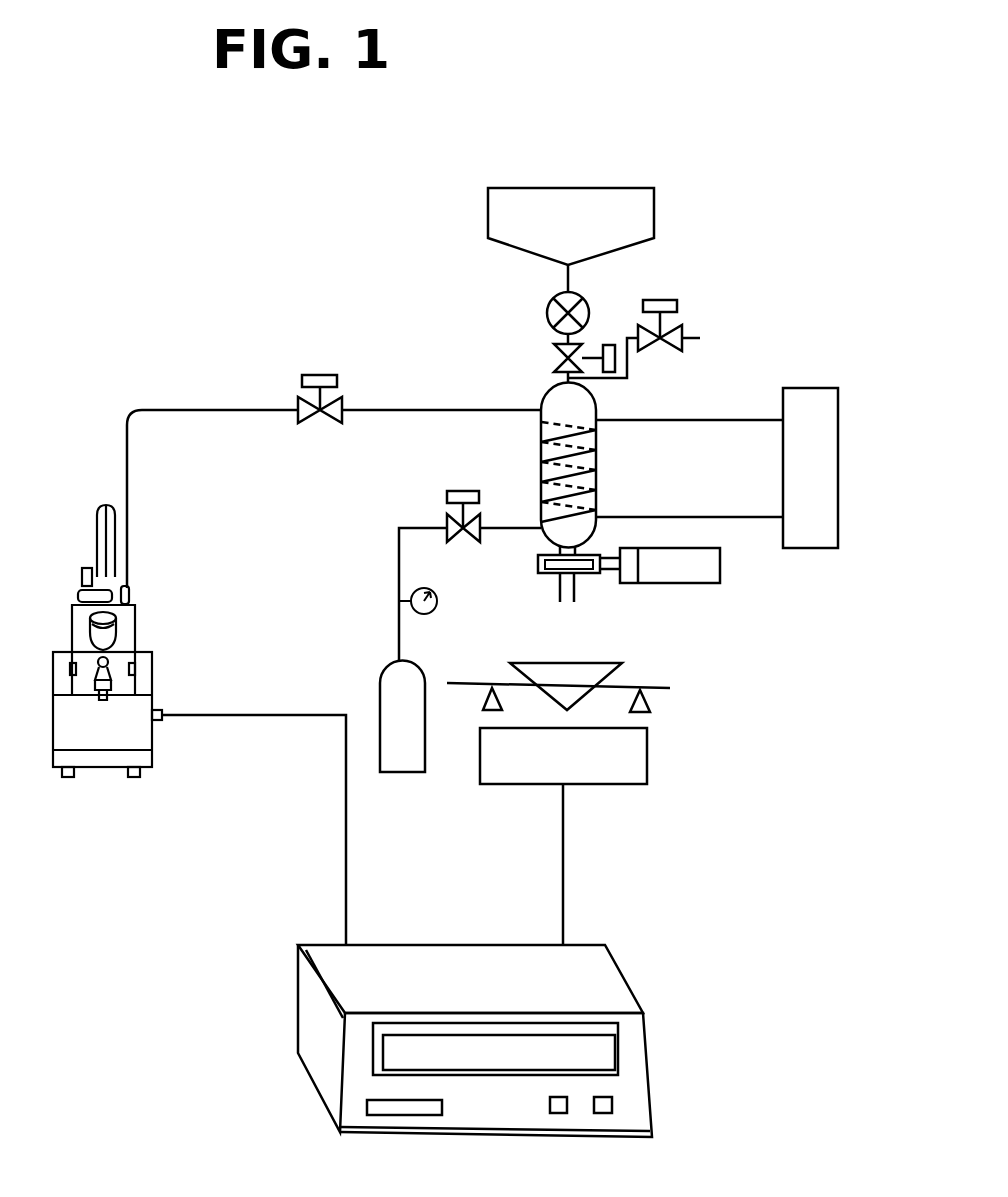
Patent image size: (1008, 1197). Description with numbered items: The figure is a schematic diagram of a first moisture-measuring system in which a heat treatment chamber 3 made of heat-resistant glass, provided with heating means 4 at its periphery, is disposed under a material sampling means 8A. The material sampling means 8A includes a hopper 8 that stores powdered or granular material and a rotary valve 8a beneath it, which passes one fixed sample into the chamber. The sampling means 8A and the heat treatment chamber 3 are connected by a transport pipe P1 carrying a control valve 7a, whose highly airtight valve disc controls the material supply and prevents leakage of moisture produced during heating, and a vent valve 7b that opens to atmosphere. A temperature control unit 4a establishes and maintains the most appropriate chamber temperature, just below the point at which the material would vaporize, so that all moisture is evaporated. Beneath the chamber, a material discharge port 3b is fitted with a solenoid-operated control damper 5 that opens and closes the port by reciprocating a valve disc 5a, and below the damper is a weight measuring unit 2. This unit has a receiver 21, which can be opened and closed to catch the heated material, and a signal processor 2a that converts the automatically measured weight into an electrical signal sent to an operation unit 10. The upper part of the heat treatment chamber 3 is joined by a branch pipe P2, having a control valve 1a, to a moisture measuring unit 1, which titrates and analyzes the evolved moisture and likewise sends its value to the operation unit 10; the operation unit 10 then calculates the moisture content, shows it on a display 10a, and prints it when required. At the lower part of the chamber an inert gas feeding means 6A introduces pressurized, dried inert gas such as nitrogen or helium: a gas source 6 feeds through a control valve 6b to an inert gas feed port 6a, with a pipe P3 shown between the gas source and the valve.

The moisture measuring unit 1 is at (128, 630).
The control valve 1a is at (310, 424).
The weight measuring unit 2 is at (705, 690).
The signal processor 2a is at (644, 770).
The receiver 21 is at (568, 676).
The heat treatment chamber 3 is at (588, 412).
The material discharge port 3b is at (571, 604).
The heating means 4 is at (596, 455).
The temperature control unit 4a is at (832, 462).
The solenoid-operated control damper 5 is at (697, 584).
The valve disc 5a is at (546, 576).
The gas source 6 is at (400, 691).
The inert gas feed port 6a is at (528, 535).
The control valve 6b is at (451, 535).
The inert gas feeding means 6A is at (388, 559).
The control valve 7a is at (556, 358).
The vent valve 7b is at (697, 345).
The hopper 8 is at (640, 222).
The rotary valve 8a is at (552, 300).
The material sampling means 8A is at (468, 178).
The operation unit 10 is at (460, 963).
The display 10a is at (598, 1053).
The transport pipe P1 is at (556, 340).
The branch pipe P2 is at (428, 400).
The pipe P3 is at (425, 525).